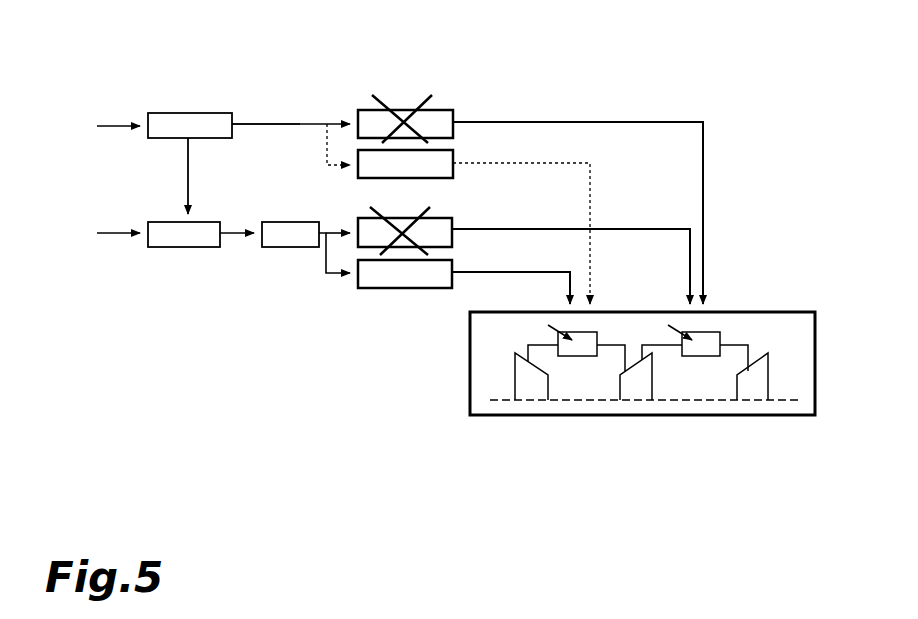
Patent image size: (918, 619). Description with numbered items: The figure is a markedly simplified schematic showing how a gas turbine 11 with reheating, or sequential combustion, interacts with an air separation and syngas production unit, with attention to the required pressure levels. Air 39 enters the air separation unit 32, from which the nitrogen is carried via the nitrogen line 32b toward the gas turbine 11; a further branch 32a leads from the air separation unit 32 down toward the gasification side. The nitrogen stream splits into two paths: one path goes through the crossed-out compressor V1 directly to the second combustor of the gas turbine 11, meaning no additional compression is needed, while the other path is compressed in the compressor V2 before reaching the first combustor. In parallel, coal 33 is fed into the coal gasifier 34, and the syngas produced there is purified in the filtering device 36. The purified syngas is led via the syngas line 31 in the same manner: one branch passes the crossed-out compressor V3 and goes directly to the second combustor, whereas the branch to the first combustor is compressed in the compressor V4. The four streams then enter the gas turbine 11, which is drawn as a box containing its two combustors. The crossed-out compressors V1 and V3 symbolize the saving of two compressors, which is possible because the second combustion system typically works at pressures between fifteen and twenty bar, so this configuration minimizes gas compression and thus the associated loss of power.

The air 39 is at (115, 123).
The air separation unit 32 is at (180, 123).
The nitrogen line 32b is at (280, 123).
The control line from first processing unit 32a is at (185, 175).
The coal 33 is at (113, 235).
The coal gasifier 34 is at (183, 240).
The filtering device 36 is at (288, 240).
The compressor V1 is at (440, 115).
The compressor V2 is at (445, 160).
The compressor V3 is at (440, 230).
The compressor V4 is at (392, 280).
The syngas line 31 is at (690, 254).
The gas turbine 11 is at (775, 323).